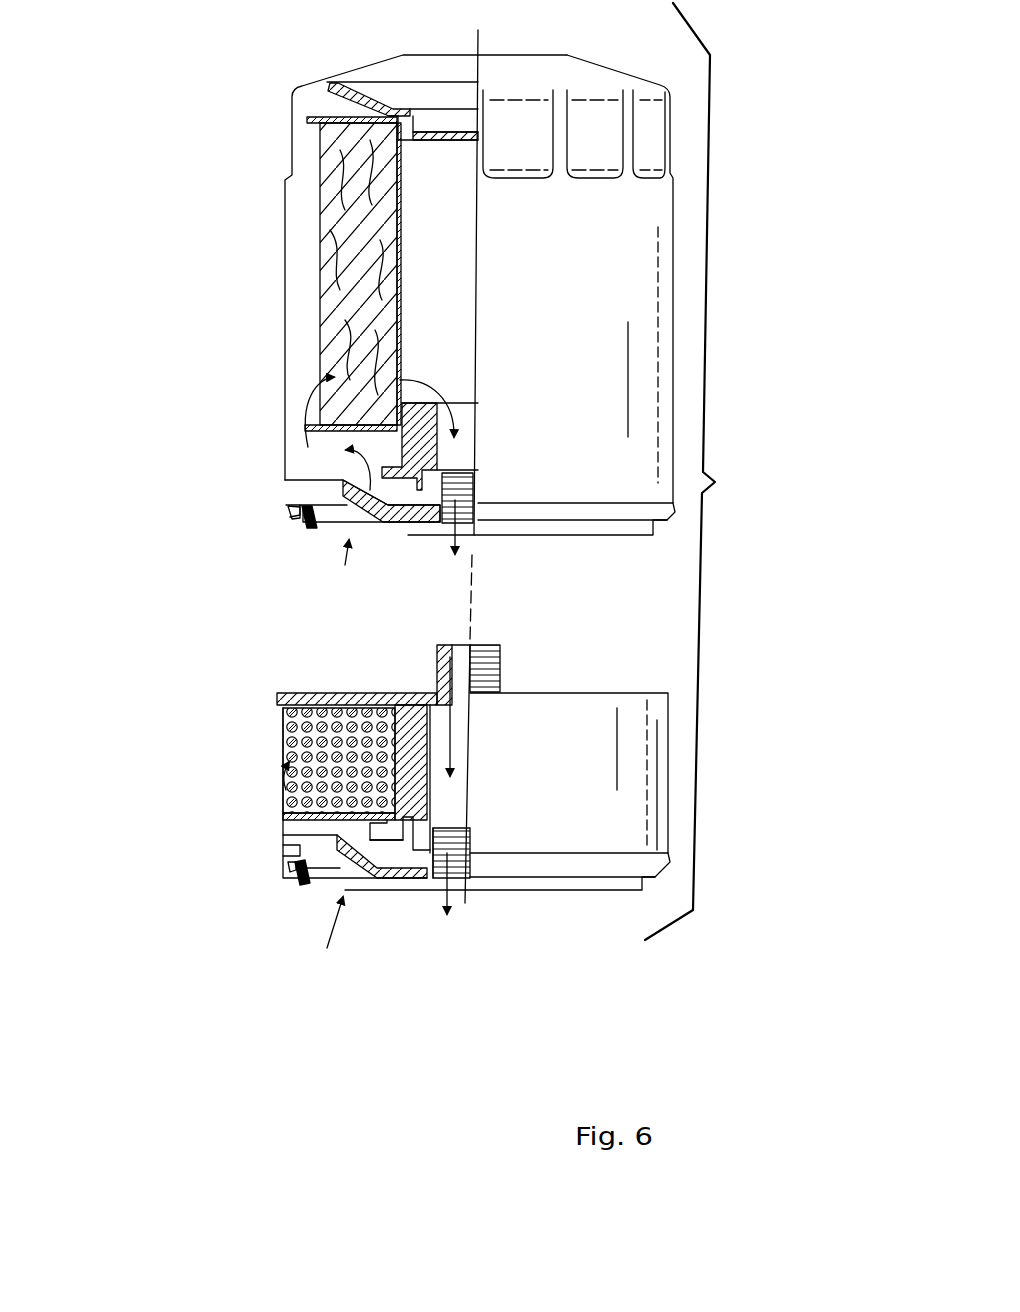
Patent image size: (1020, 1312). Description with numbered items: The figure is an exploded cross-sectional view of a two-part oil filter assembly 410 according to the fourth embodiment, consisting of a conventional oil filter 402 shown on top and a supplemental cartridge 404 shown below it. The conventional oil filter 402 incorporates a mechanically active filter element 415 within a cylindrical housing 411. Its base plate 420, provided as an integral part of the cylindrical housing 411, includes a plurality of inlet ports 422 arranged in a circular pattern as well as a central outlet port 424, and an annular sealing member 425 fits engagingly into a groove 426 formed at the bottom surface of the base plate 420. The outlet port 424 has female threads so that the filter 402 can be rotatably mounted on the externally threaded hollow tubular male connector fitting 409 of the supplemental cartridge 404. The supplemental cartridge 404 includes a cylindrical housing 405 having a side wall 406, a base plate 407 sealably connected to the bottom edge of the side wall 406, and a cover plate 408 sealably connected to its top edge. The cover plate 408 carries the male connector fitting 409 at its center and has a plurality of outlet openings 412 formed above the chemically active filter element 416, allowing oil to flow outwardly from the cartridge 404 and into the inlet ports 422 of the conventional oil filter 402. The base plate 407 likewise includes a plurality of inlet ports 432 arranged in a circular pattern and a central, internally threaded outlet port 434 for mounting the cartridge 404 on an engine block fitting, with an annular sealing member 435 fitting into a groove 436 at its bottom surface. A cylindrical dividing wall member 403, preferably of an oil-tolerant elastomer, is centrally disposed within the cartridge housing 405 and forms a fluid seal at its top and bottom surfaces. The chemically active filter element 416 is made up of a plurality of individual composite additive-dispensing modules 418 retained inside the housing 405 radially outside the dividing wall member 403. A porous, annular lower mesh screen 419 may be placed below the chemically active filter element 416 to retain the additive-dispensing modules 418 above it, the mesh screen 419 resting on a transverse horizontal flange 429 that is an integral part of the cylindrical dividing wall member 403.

The conventional oil filter 402 is at (234, 166).
The cylindrical dividing wall member 403 is at (410, 703).
The supplemental cartridge 404 is at (232, 727).
The cylindrical housing 405 is at (566, 794).
The side wall 406 is at (500, 838).
The base plate 407 is at (403, 883).
The cover plate 408 is at (317, 692).
The hollow tubular male connector fitting 409 is at (500, 663).
The oil filter assembly 410 is at (740, 123).
The cylindrical housing 411 is at (576, 322).
The outlet openings 412 is at (363, 692).
The mechanically active filter element 415 is at (322, 270).
The chemically active filter element 416 is at (280, 712).
The additive-dispensing modules 418 is at (280, 780).
The lower mesh screen 419 is at (282, 848).
The base plate 420 is at (408, 522).
The inlet ports 422 is at (342, 515).
The central outlet port 424 is at (467, 507).
The annular sealing member 425 is at (303, 529).
The groove 426 is at (290, 504).
The transverse horizontal flange 429 is at (395, 855).
The inlet ports 432 is at (327, 887).
The central outlet port 434 is at (458, 878).
The annular sealing member 435 is at (297, 882).
The groove 436 is at (293, 883).